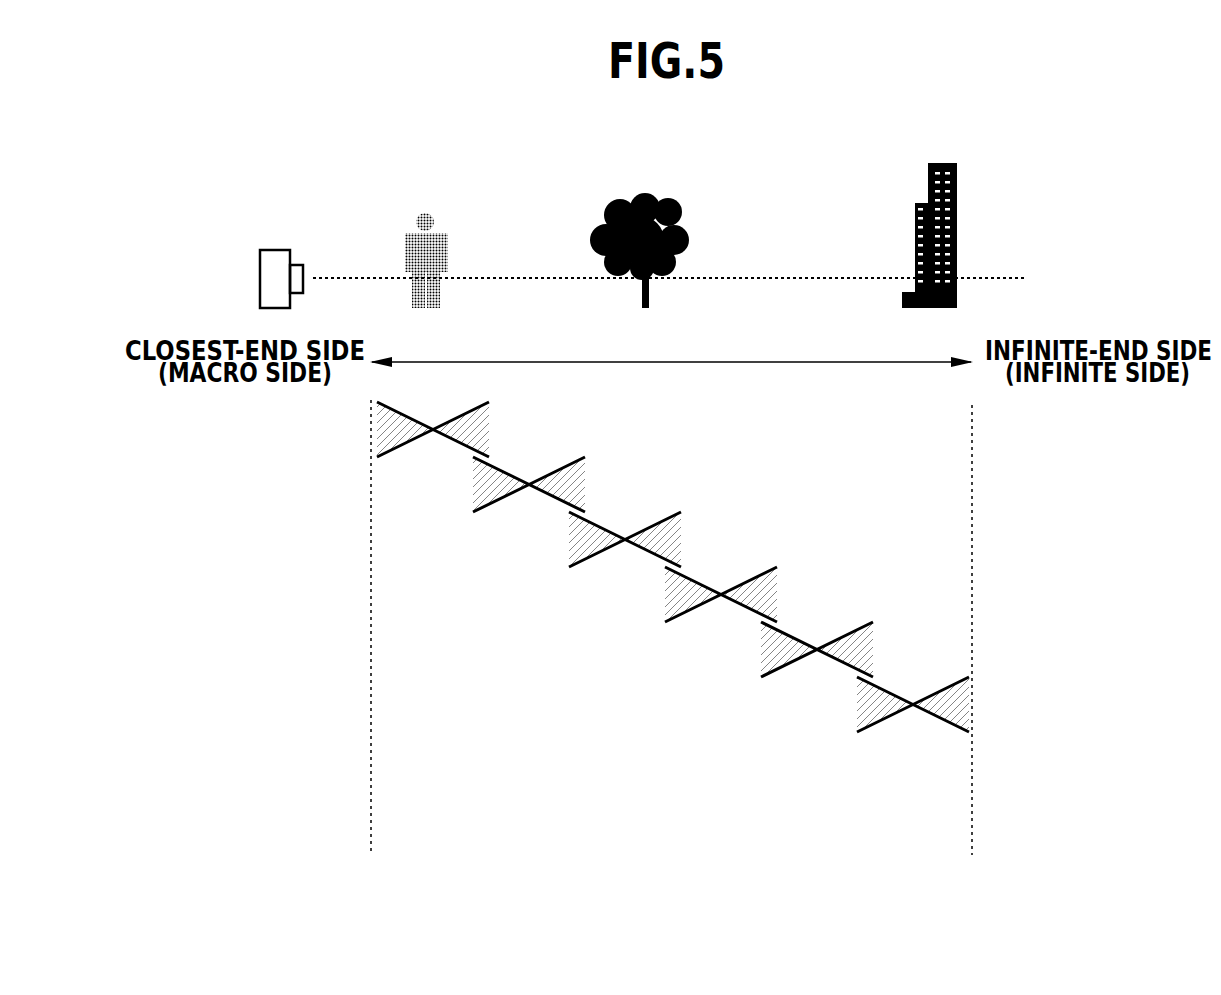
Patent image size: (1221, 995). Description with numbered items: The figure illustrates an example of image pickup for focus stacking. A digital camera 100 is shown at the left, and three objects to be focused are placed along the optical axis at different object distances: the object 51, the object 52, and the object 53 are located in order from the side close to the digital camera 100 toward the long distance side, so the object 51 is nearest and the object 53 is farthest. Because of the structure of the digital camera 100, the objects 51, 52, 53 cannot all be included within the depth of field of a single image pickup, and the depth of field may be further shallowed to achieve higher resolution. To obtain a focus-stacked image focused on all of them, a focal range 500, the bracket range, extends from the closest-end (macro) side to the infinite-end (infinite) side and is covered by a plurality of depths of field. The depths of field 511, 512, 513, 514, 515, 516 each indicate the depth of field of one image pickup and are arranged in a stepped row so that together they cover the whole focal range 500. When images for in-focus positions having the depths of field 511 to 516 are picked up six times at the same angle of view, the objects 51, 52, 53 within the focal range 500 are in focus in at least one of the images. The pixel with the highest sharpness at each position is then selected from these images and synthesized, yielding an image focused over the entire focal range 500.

The digital camera 100 is at (275, 250).
The object 51 is at (426, 212).
The object 52 is at (648, 195).
The object 53 is at (945, 163).
The focal range 500 is at (802, 364).
The depth of field 511 is at (398, 453).
The depth of field 512 is at (502, 500).
The depth of field 513 is at (592, 557).
The depth of field 514 is at (695, 607).
The depth of field 515 is at (787, 665).
The depth of field 516 is at (890, 717).